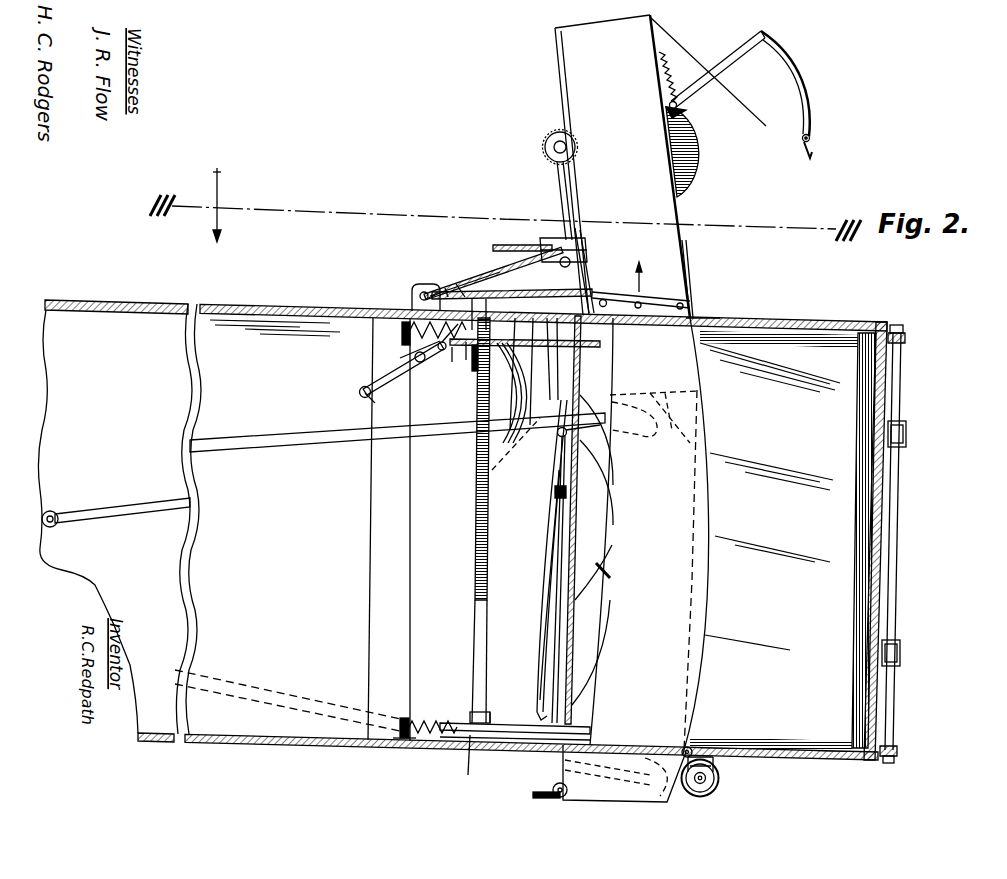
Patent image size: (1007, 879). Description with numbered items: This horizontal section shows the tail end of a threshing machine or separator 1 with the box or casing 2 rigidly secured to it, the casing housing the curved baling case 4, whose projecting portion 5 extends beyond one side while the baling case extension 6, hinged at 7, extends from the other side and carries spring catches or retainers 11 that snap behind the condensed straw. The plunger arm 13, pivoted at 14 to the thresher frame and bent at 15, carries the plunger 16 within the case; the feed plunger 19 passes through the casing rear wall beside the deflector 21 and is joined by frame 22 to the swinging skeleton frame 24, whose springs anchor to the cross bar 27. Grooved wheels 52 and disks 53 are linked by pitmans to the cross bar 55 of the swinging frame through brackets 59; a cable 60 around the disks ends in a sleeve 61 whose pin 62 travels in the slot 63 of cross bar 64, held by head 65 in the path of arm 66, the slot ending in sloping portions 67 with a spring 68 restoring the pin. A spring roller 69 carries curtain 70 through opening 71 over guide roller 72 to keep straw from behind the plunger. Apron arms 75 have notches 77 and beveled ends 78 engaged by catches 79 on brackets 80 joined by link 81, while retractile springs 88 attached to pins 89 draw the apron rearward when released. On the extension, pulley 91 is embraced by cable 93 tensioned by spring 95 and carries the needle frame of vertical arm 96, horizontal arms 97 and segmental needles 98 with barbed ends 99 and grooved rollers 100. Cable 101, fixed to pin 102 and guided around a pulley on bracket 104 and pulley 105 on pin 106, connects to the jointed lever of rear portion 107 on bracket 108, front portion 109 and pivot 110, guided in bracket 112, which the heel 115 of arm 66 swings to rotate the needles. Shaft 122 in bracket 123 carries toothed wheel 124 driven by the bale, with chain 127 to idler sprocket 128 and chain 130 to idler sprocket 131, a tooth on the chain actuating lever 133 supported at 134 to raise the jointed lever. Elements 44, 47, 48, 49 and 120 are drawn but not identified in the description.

The threshing machine or separator 1 is at (119, 521).
The box or casing 2 is at (815, 324).
The baling case 4 is at (679, 536).
The projecting portion 5 is at (624, 773).
The extension 6 is at (660, 166).
The hinge 7 is at (705, 305).
The spring catches or retainers 11 is at (588, 300).
The plunger arm 13 is at (305, 445).
The pivot 14 is at (58, 526).
The bend 15 is at (502, 447).
The plunger 16 is at (673, 570).
The feed plunger 19 is at (747, 471).
The deflector 21 is at (856, 564).
The frame 22 is at (904, 345).
The swinging skeleton frame 24 is at (906, 337).
The cross bar 27 is at (380, 590).
The bar 44 is at (503, 245).
The roller 47 is at (530, 792).
The pin 48 is at (559, 263).
The bracket 49 is at (560, 242).
The grooved wheels 52 is at (587, 520).
The disks 53 is at (592, 555).
The cross bar 55 is at (898, 552).
The brackets 59 is at (907, 434).
The cable 60 is at (604, 568).
The sleeve 61 is at (557, 492).
The pin 62 is at (560, 437).
The slot 63 is at (548, 562).
The cross bar 64 is at (542, 600).
The enlargement or head 65 is at (556, 496).
The arm 66 is at (618, 396).
The sloping portion 67 is at (539, 712).
The spring 68 is at (566, 432).
The spring roller 69 is at (706, 778).
The curtain 70 is at (716, 788).
The opening 71 is at (700, 758).
The guide roller 72 is at (688, 747).
The arms 75 is at (613, 345).
The notches 77 is at (467, 364).
The beveled ends 78 is at (470, 365).
The catches 79 is at (473, 299).
The brackets 80 is at (488, 299).
The link 81 is at (476, 575).
The retractile springs 88 is at (448, 343).
The pins 89 is at (400, 330).
The grooved pulley 91 is at (699, 146).
The cable 93 is at (680, 106).
The retractile spring 95 is at (674, 76).
The vertical arm 96 is at (690, 122).
The horizontal arms 97 is at (730, 62).
The segmental arms or needles 98 is at (805, 102).
The barbed ends 99 is at (811, 156).
The grooved rollers 100 is at (810, 138).
The cable 101 is at (490, 272).
The pin 102 is at (460, 284).
The bracket 104 is at (411, 300).
The pulley 105 is at (443, 351).
The pin 106 is at (400, 378).
The rear portion 107 is at (415, 360).
The bracket 108 is at (365, 398).
The front portion 109 is at (452, 366).
The pivot 110 is at (405, 357).
The bracket 112 is at (478, 455).
The heel 115 is at (516, 457).
The plate 120 is at (627, 271).
The shaft 122 is at (556, 135).
The bracket 123 is at (552, 143).
The toothed wheel 124 is at (542, 147).
The chain 127 is at (558, 177).
The idler sprocket wheel 128 is at (590, 285).
The chain 130 is at (548, 292).
The idler sprocket wheel 131 is at (436, 292).
The lever 133 is at (465, 297).
The support 134 is at (448, 297).